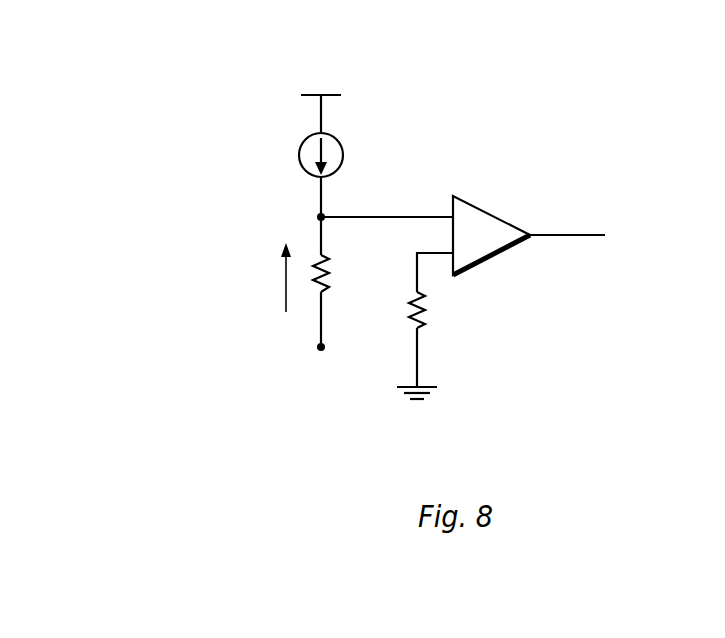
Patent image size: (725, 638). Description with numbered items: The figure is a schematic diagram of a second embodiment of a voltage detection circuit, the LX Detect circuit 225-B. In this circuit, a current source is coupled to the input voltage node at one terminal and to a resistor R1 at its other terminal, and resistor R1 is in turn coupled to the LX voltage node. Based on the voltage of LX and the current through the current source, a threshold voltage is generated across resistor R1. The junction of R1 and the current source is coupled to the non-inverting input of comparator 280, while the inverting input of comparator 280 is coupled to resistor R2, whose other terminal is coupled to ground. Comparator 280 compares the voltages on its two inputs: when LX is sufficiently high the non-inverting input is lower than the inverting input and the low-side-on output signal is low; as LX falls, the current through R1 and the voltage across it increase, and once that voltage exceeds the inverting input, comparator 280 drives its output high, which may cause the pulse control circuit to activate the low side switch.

The LX Detect circuit 225-B is at (435, 33).
The comparator 280 is at (480, 196).
The resistor R1 is at (337, 273).
The resistor R2 is at (434, 310).